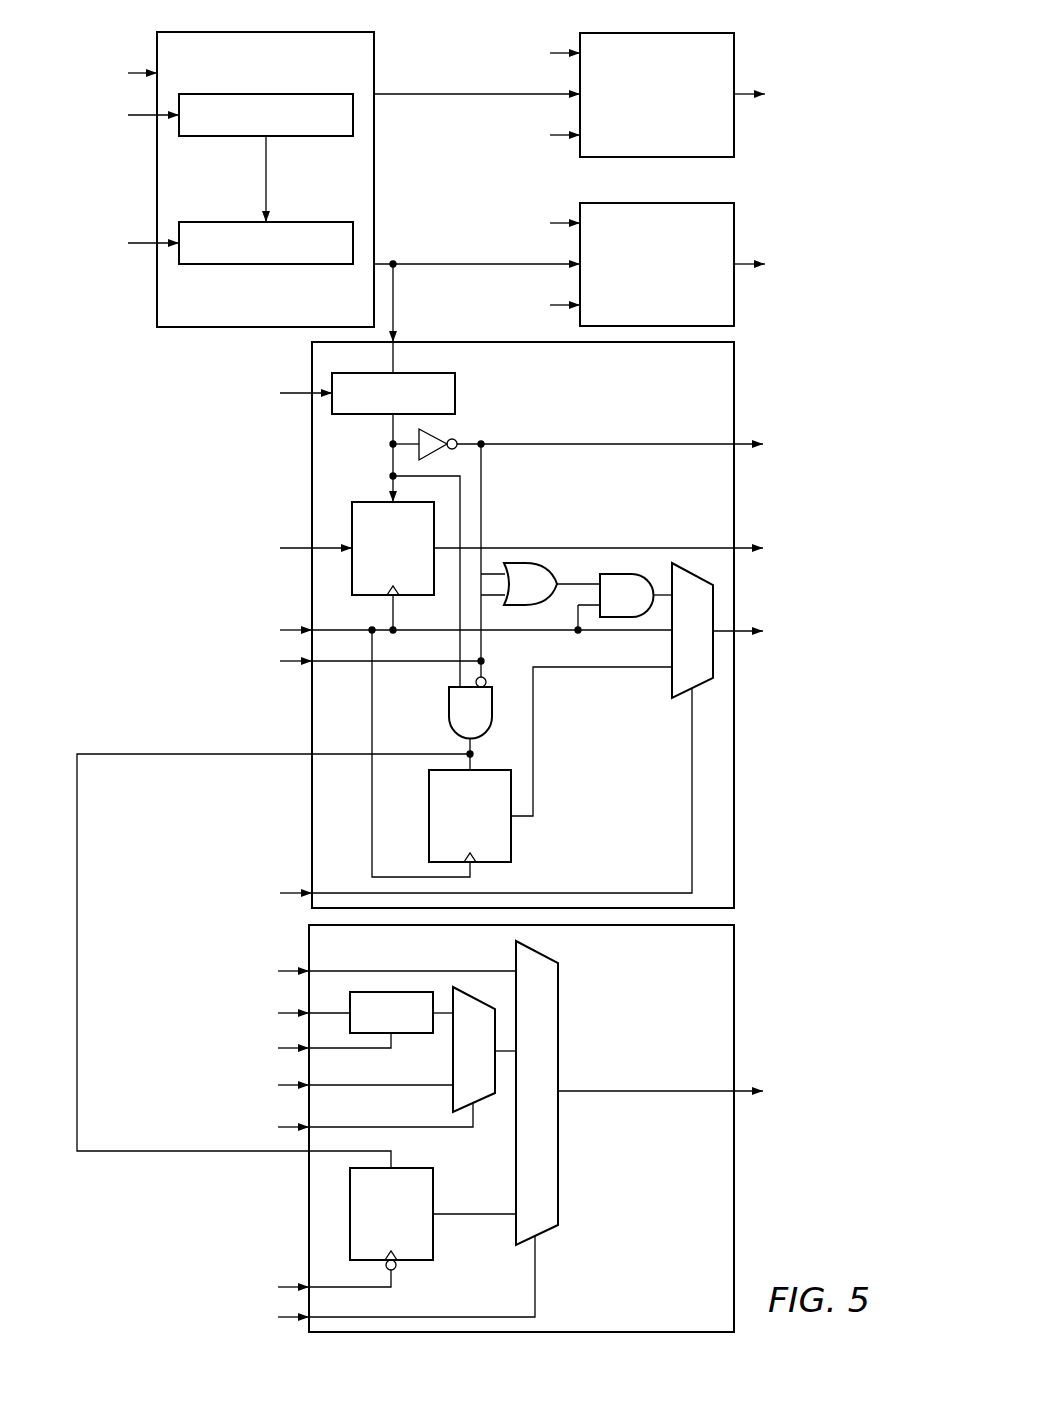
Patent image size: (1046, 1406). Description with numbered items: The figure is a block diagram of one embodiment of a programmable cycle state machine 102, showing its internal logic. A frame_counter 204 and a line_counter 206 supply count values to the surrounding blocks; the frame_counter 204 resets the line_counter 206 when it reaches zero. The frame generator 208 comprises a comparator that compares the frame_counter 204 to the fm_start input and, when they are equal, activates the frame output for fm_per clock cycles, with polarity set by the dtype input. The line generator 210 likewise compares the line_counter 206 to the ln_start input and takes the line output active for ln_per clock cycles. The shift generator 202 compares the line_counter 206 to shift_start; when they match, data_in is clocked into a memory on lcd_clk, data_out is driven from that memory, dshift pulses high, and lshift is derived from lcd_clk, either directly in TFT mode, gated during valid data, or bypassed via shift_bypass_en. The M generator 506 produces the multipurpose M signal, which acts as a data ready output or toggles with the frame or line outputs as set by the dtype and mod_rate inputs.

The programmable cycle state machine 102 is at (100, 1257).
The shift generator 202 is at (737, 790).
The frame_counter 204 is at (256, 93).
The line_counter 206 is at (256, 266).
The frame generator 208 is at (737, 58).
The line generator 210 is at (737, 228).
The M generator 506 is at (737, 1198).